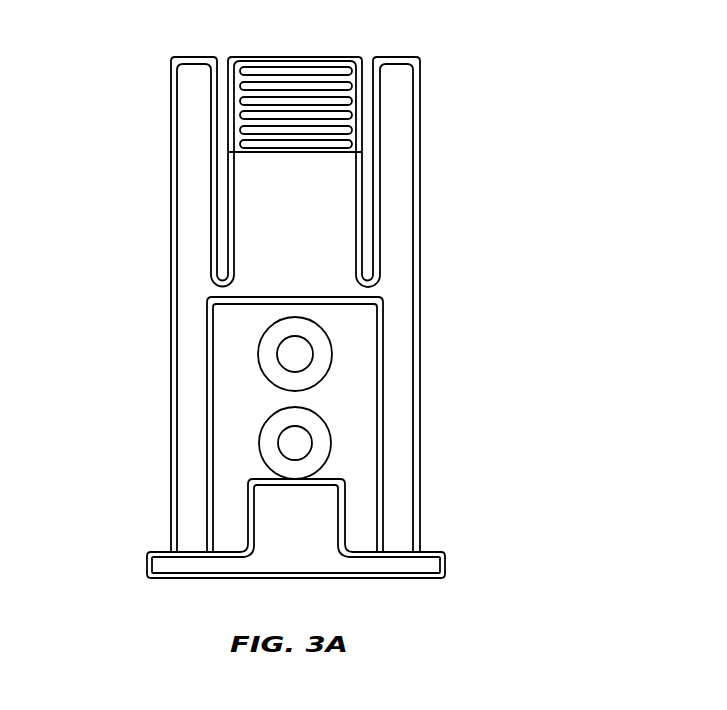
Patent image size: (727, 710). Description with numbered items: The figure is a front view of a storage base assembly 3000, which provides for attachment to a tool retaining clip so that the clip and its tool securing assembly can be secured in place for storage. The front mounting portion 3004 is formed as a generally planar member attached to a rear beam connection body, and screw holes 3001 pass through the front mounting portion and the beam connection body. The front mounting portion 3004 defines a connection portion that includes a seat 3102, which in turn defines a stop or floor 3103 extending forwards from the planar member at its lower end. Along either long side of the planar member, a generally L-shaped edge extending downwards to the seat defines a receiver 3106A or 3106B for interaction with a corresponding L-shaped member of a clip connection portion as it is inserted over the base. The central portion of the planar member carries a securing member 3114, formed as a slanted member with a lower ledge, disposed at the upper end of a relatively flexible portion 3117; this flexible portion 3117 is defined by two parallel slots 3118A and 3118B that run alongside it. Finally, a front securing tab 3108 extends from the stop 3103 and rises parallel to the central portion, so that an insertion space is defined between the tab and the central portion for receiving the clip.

The storage base assembly 3000 is at (492, 245).
The securing member 3114 is at (255, 62).
The parallel slot 3118B is at (222, 182).
The parallel slot 3118A is at (368, 208).
The front mounting portion 3004 is at (248, 220).
The flexible portion 3117 is at (263, 247).
The receiver 3106B is at (172, 440).
The receiver 3106A is at (422, 503).
The screw hole 3001 is at (338, 366).
The seat 3102 is at (350, 503).
The front securing tab 3108 is at (290, 527).
The stop or floor 3103 is at (420, 564).